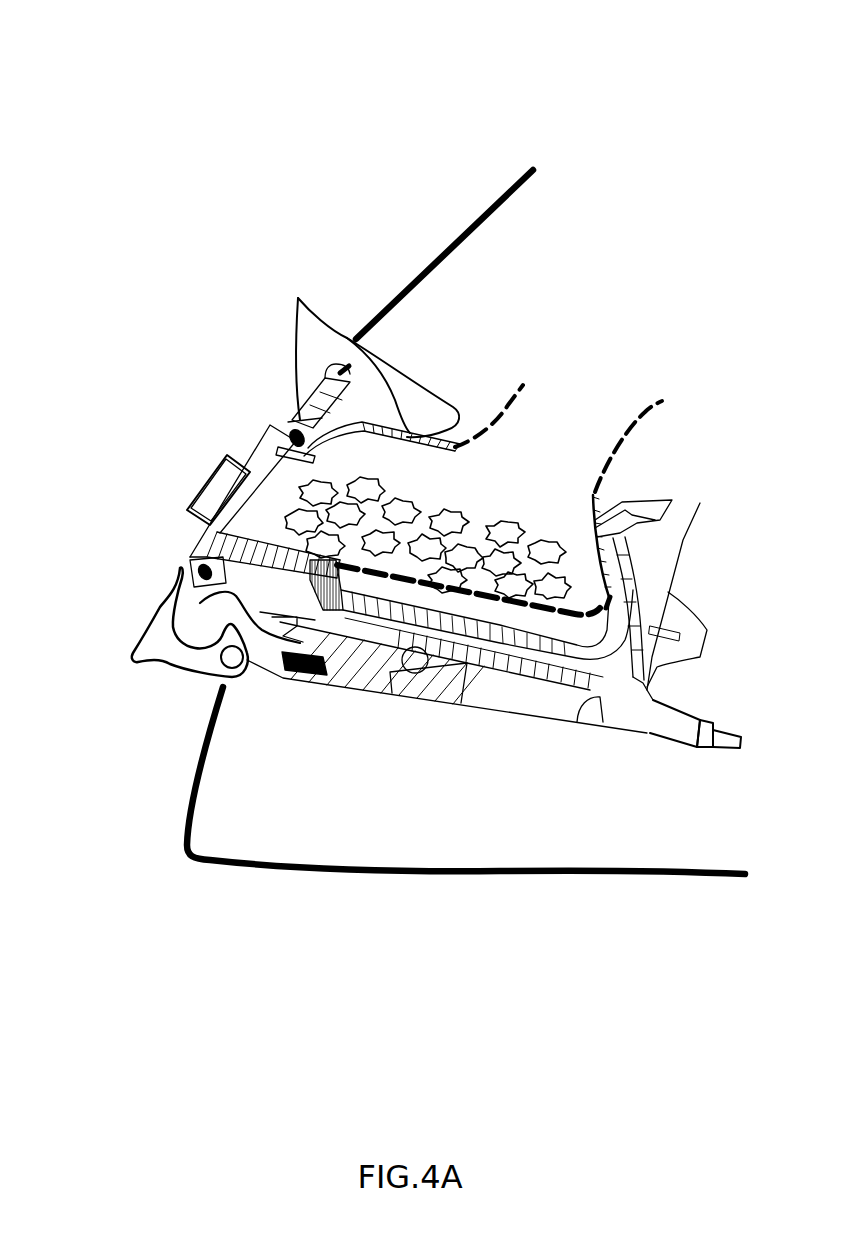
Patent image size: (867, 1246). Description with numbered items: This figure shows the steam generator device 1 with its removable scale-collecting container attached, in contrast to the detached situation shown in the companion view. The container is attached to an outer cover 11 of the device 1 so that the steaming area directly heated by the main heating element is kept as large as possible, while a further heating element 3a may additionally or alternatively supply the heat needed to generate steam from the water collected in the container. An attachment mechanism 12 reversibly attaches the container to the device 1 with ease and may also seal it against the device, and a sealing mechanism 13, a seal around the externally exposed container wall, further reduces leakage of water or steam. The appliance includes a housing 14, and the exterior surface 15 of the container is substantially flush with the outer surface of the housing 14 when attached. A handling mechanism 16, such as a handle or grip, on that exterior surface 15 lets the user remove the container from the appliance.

The device 1 is at (705, 93).
The heating element 3a is at (673, 728).
The outer cover 11 is at (361, 425).
The attachment mechanism 12 is at (410, 368).
The sealing mechanism 13 is at (283, 436).
The housing 14 is at (460, 228).
The exterior surface 15 is at (240, 456).
The handling mechanism 16 is at (197, 490).